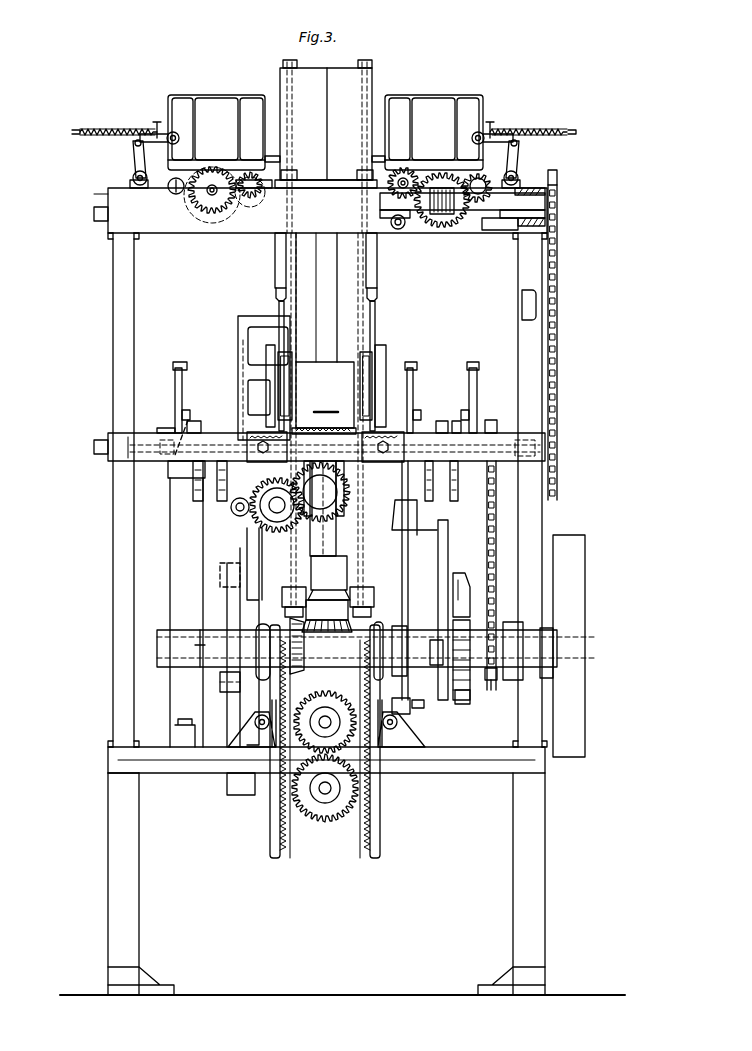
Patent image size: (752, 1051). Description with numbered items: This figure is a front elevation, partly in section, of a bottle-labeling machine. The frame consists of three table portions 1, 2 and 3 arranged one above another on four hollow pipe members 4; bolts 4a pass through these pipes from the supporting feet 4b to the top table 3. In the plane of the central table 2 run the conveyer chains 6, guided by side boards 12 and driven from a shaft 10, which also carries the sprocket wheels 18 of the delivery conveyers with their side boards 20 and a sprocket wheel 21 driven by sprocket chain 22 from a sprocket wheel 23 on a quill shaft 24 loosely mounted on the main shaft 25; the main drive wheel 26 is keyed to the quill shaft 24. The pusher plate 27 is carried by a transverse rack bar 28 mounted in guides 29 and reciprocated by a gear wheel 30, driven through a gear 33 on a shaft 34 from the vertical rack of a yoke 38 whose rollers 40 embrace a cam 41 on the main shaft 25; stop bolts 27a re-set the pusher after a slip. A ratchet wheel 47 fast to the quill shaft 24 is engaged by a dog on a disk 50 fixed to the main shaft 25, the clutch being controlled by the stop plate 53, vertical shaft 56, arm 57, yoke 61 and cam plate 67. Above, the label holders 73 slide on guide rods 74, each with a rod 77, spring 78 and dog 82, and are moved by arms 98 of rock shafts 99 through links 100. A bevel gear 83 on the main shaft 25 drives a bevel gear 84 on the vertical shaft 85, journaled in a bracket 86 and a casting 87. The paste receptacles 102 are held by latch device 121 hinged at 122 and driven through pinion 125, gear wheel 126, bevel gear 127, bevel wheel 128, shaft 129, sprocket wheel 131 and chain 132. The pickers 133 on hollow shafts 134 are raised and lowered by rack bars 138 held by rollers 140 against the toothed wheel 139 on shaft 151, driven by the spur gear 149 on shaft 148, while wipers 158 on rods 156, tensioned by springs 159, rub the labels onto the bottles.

The table portion 1 is at (470, 764).
The central table 2 is at (124, 440).
The top table 3 is at (320, 210).
The hollow pipe members 4 is at (113, 344).
The bolts 4a is at (522, 305).
The supporting feet 4b is at (326, 974).
The conveyer chains 6 is at (312, 432).
The shaft 10 is at (458, 472).
The side boards 12 is at (296, 328).
The sprocket wheels 18 is at (194, 426).
The side boards or guards 20 is at (175, 377).
The sprocket wheel 21 is at (494, 422).
The sprocket chain 22 is at (487, 536).
The sprocket wheel 23 is at (491, 682).
The quill shaft 24 is at (588, 659).
The main shaft 25 is at (604, 641).
The main drive wheel 26 is at (578, 604).
The pusher plate 27 is at (238, 340).
The stop bolts 27a is at (108, 455).
The rack bar 28 is at (190, 424).
The ways or guides 29 is at (138, 440).
The gear wheel 30 is at (352, 481).
The gear 33 is at (266, 535).
The shaft 34 is at (270, 510).
The yoke 38 is at (250, 542).
The antifriction rollers 40 is at (220, 575).
The cam 41 is at (227, 610).
The ratchet wheel 47 is at (454, 680).
The disk 50 is at (440, 598).
The stop plate 53 is at (325, 395).
The vertical shaft 56 is at (404, 558).
The arm 57 is at (405, 706).
The yoke 61 is at (456, 578).
The cam plate 67 is at (434, 660).
The label holders 73 is at (325, 132).
The guide rods 74 is at (375, 158).
The rod 77 is at (332, 121).
The spring 78 is at (118, 132).
The spring-pressed dog 82 is at (498, 117).
The bevel gear wheel 83 is at (312, 660).
The bevel gear 84 is at (327, 610).
The vertical shaft 85 is at (330, 238).
The bracket 86 is at (347, 578).
The casting 87 is at (326, 146).
The arm 98 is at (133, 152).
The rock shaft 99 is at (133, 176).
The links 100 is at (160, 142).
The paste receptacles 102 is at (176, 194).
The latch device 121 is at (507, 218).
The hinge 122 is at (500, 232).
The pinion 125 is at (250, 196).
The gear wheel 126 is at (209, 178).
The bevel gear 127 is at (214, 192).
The bevel wheel 128 is at (440, 215).
The shaft 129 is at (382, 212).
The sprocket wheel 131 is at (558, 185).
The sprocket chain 132 is at (557, 292).
The pickers 133 is at (275, 262).
The hollow rods or shafts 134 is at (276, 294).
The rack bars 138 is at (278, 858).
The toothed wheel 139 is at (325, 722).
The rollers 140 is at (326, 734).
The shaft 148 is at (325, 794).
The spur gear wheel 149 is at (338, 822).
The shaft 151 is at (325, 728).
The vertical rods 156 is at (279, 306).
The rubber wipers 158 is at (275, 355).
The tension springs 159 is at (256, 438).